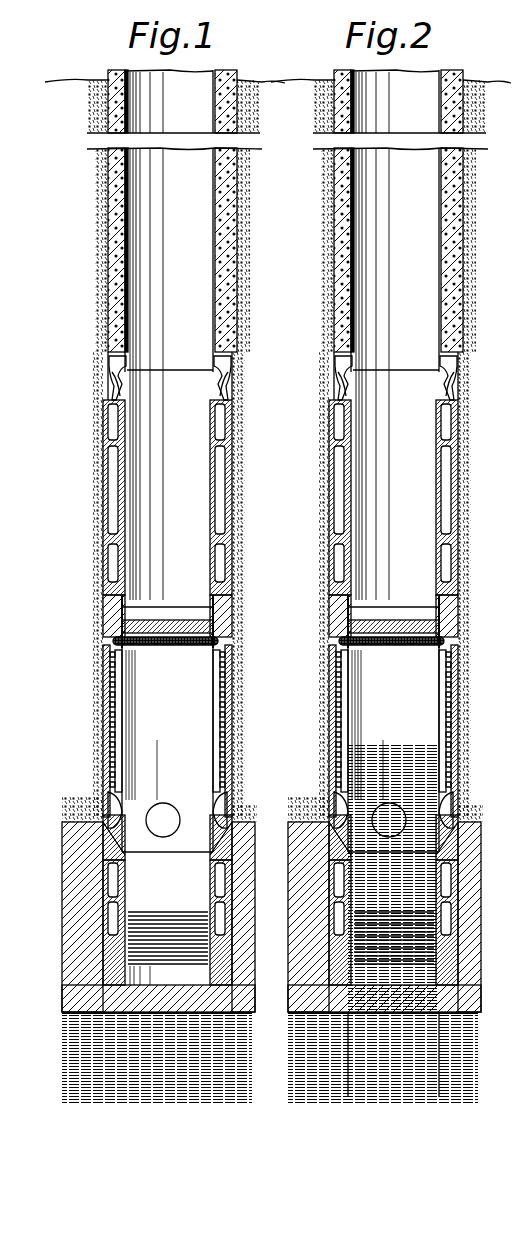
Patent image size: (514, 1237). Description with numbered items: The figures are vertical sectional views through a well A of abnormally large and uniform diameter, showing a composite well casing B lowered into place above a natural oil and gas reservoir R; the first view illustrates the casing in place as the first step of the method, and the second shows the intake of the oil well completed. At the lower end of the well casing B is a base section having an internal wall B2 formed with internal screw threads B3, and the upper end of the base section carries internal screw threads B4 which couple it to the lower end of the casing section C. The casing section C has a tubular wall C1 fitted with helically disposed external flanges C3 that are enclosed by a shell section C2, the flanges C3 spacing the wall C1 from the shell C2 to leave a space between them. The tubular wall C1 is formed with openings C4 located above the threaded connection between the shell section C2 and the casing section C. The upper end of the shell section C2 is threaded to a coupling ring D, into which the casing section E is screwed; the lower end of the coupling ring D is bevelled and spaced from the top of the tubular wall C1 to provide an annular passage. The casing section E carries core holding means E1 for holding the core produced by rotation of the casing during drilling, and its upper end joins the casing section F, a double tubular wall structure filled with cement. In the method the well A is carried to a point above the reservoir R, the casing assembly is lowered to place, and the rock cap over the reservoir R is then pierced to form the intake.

In FIG. 1, the well A is at (233, 474).
In FIG. 2, the well A is at (410, 497).
In FIG. 1, the well casing B is at (233, 537).
In FIG. 1, the internal wall B2 is at (210, 878).
In FIG. 2, the internal wall B2 is at (362, 843).
In FIG. 1, the internal screw threads B3 is at (108, 936).
In FIG. 2, the internal screw threads B3 is at (372, 962).
In FIG. 1, the internal screw threads B4 is at (105, 858).
In FIG. 2, the internal screw threads B4 is at (386, 815).
In FIG. 1, the casing section C is at (167, 748).
In FIG. 2, the casing section C is at (393, 748).
In FIG. 1, the tubular wall C1 is at (212, 760).
In FIG. 2, the tubular wall C1 is at (469, 721).
In FIG. 1, the shell section C2 is at (233, 690).
In FIG. 2, the shell section C2 is at (418, 719).
In FIG. 1, the flanges C3 is at (220, 728).
In FIG. 1, the openings C4 is at (217, 800).
In FIG. 2, the openings C4 is at (414, 786).
In FIG. 1, the coupling ring D is at (233, 612).
In FIG. 2, the coupling ring D is at (410, 621).
In FIG. 1, the casing section E is at (192, 508).
In FIG. 2, the casing section E is at (428, 335).
In FIG. 1, the core holding means E1 is at (216, 376).
In FIG. 2, the core holding means E1 is at (414, 376).
In FIG. 1, the casing section F is at (236, 300).
In FIG. 2, the casing section F is at (413, 211).
In FIG. 1, the natural oil and gas reservoir R is at (82, 1025).
In FIG. 2, the natural oil and gas reservoir R is at (383, 1068).